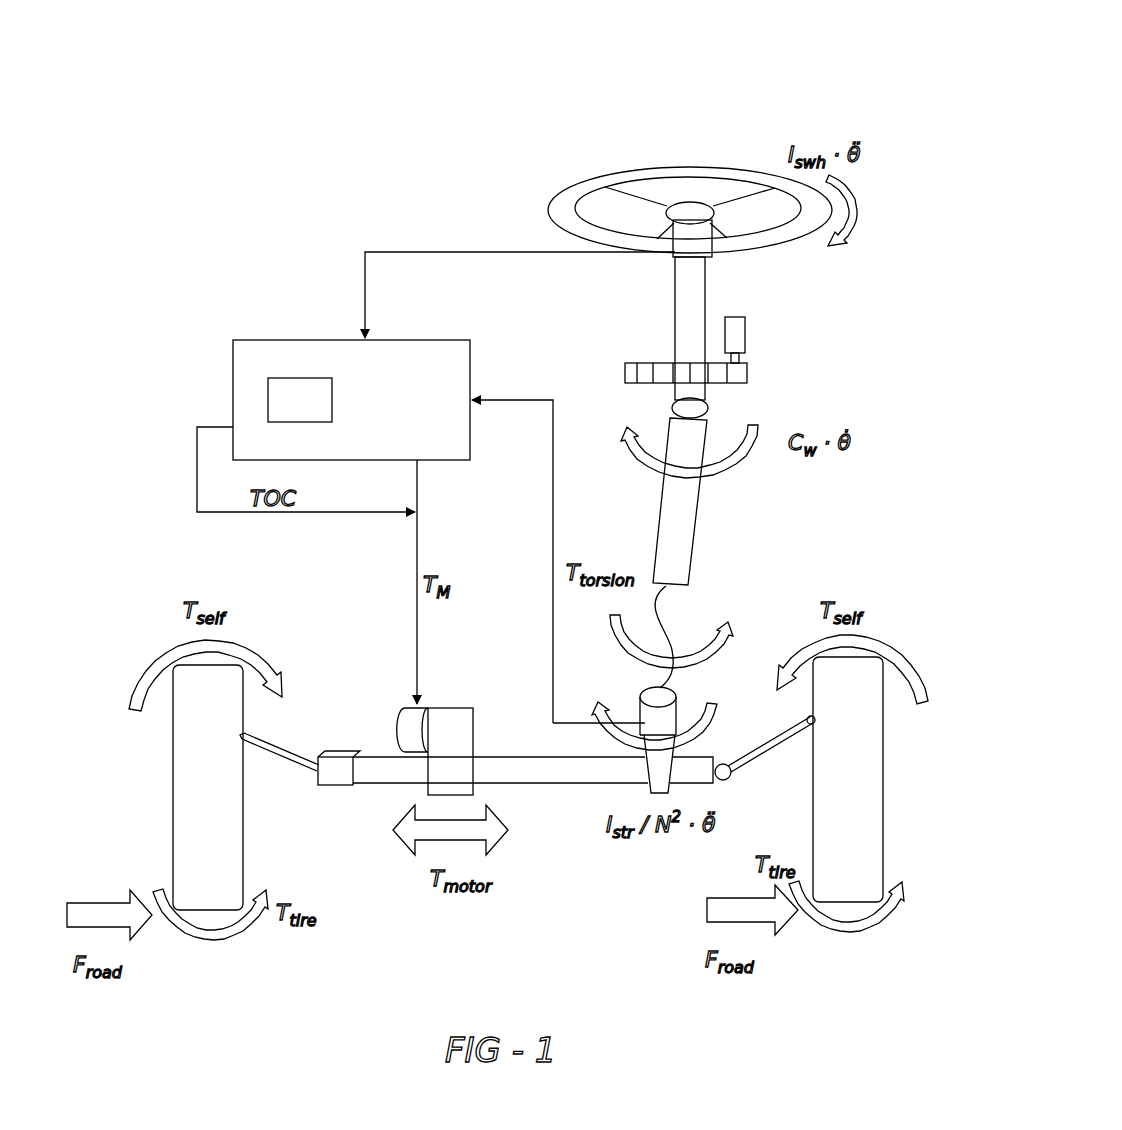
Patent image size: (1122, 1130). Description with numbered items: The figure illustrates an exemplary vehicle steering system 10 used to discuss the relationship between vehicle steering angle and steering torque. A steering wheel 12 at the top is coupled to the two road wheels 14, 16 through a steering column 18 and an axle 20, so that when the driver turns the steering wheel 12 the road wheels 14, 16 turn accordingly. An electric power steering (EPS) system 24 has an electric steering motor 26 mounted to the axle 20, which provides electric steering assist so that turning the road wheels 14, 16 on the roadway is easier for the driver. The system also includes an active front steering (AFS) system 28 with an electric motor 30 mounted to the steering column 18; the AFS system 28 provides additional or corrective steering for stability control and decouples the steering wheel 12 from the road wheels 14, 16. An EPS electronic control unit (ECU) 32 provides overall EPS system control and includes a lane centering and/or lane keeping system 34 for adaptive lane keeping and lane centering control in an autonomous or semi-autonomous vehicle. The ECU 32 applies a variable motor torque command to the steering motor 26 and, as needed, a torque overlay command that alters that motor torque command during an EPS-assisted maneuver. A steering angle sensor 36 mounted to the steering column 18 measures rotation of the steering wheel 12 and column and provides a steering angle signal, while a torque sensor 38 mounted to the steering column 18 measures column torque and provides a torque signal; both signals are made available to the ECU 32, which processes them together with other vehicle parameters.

The vehicle steering system 10 is at (733, 86).
The steering wheel 12 is at (577, 197).
The road wheel 14 is at (188, 782).
The road wheel 16 is at (866, 814).
The steering column 18 is at (677, 320).
The axle 20 is at (582, 786).
The electric power steering (EPS) system 24 is at (379, 686).
The electric steering motor 26 is at (413, 740).
The active front steering (AFS) system 28 is at (800, 367).
The electric motor 30 is at (736, 332).
The EPS electronic control unit (ECU) 32 is at (288, 340).
The lane centering and/or lane keeping system 34 is at (314, 413).
The steering angle sensor 36 is at (697, 246).
The torque sensor 38 is at (652, 720).